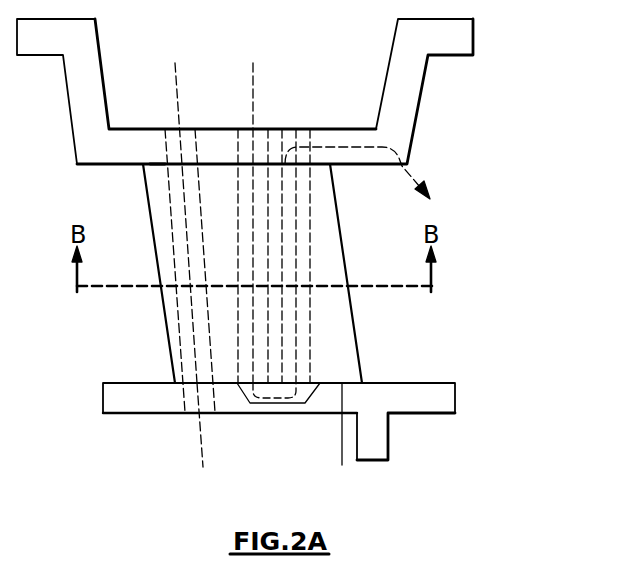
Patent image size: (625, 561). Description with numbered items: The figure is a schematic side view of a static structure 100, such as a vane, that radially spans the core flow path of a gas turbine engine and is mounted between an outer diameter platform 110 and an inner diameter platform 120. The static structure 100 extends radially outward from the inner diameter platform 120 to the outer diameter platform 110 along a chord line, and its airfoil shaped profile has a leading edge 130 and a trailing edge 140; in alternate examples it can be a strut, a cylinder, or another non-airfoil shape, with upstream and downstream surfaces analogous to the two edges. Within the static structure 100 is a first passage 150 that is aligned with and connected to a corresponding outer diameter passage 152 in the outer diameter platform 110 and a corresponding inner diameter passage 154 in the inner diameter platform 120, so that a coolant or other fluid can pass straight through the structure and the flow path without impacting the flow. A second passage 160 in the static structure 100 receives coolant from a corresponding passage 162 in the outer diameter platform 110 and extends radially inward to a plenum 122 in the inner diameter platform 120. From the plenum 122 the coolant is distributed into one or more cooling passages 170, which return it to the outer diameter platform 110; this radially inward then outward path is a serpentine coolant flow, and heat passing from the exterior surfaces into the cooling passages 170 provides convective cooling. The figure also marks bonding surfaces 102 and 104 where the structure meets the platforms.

The static structure 100 is at (488, 197).
The first bonding surface 102 is at (158, 165).
The second bonding surface 104 is at (342, 465).
The outer diameter platform 110 is at (460, 36).
The inner diameter platform 120 is at (455, 396).
The plenum 122 is at (302, 392).
The leading edge 130 is at (162, 317).
The trailing edge 140 is at (358, 333).
The first passage 150 is at (190, 178).
The outer diameter passage 152 is at (187, 133).
The inner diameter passage 154 is at (207, 402).
The second passage 160 is at (260, 177).
The corresponding passage 162 is at (262, 133).
The cooling passages 170 is at (335, 197).